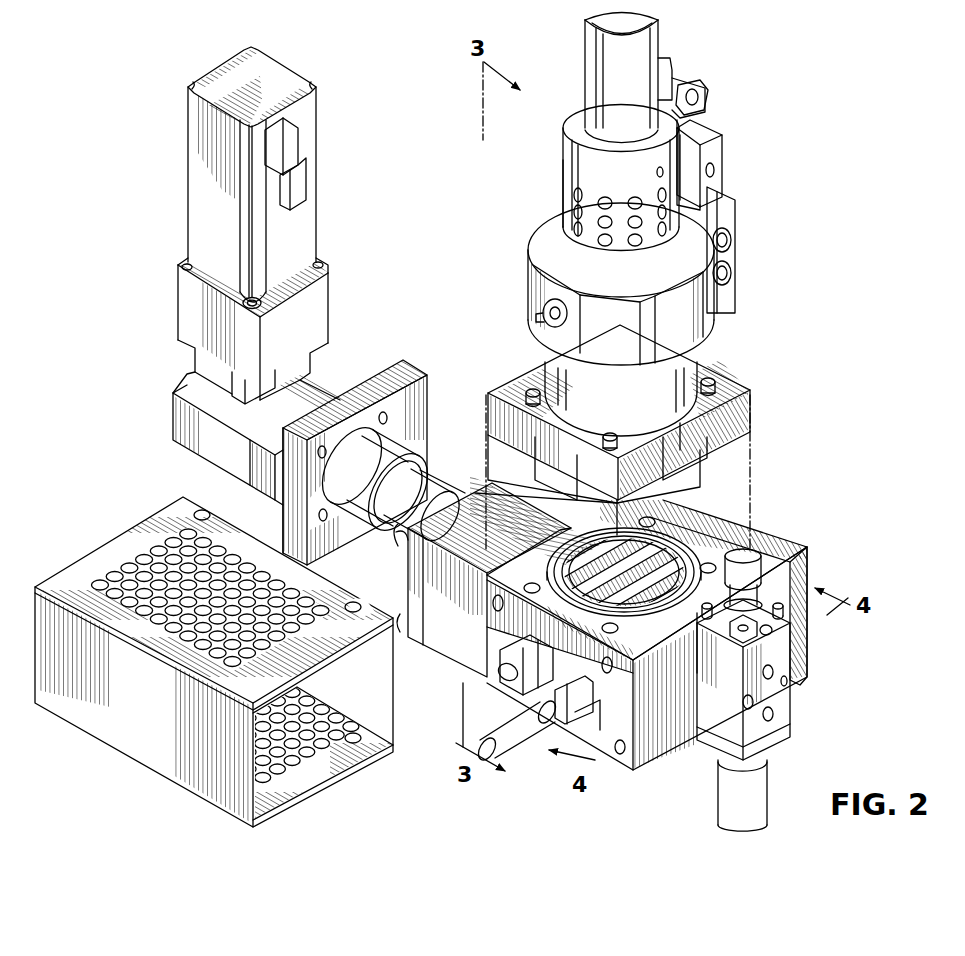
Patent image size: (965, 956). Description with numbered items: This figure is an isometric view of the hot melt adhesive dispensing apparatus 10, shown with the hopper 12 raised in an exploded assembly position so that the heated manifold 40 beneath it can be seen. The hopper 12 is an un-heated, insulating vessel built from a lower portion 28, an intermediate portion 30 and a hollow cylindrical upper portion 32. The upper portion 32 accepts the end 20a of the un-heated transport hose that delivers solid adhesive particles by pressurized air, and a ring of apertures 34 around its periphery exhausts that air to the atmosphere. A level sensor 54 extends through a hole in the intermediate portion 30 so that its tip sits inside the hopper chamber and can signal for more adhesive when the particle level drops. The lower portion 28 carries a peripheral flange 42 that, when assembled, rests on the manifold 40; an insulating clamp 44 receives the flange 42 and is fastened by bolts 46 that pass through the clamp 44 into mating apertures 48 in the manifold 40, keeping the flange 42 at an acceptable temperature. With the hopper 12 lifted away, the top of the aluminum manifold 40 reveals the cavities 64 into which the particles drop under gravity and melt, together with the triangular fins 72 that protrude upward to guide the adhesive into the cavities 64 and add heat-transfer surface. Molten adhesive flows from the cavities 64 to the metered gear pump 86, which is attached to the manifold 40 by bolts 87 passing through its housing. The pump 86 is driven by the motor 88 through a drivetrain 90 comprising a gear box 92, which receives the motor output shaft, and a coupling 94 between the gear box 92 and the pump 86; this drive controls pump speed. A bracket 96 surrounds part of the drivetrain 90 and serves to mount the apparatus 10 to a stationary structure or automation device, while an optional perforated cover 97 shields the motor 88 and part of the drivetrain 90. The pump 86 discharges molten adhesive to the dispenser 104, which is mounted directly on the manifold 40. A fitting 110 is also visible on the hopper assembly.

The apparatus 10 is at (399, 89).
The hopper 12 is at (513, 214).
The end of transport hose 20a is at (582, 118).
The lower portion 28 is at (543, 350).
The intermediate portion 30 is at (710, 328).
The upper portion 32 is at (563, 145).
The apertures 34 is at (633, 203).
The heated manifold 40 is at (627, 772).
The peripheral flange 42 is at (690, 463).
The clamp 44 is at (752, 404).
The bolts 46 is at (524, 392).
The mating apertures 48 is at (790, 595).
The level sensor 54 is at (538, 315).
The cavities 64 is at (640, 612).
The fins 72 is at (600, 541).
The pump 86 is at (455, 658).
The bolts 87 is at (404, 533).
The motor 88 is at (190, 160).
The drivetrain 90 is at (340, 366).
The gear box 92 is at (222, 468).
The coupling 94 is at (355, 523).
The bracket 96 is at (425, 372).
The cover 97 is at (138, 758).
The dispenser 104 is at (802, 712).
The fitting 110 is at (720, 167).